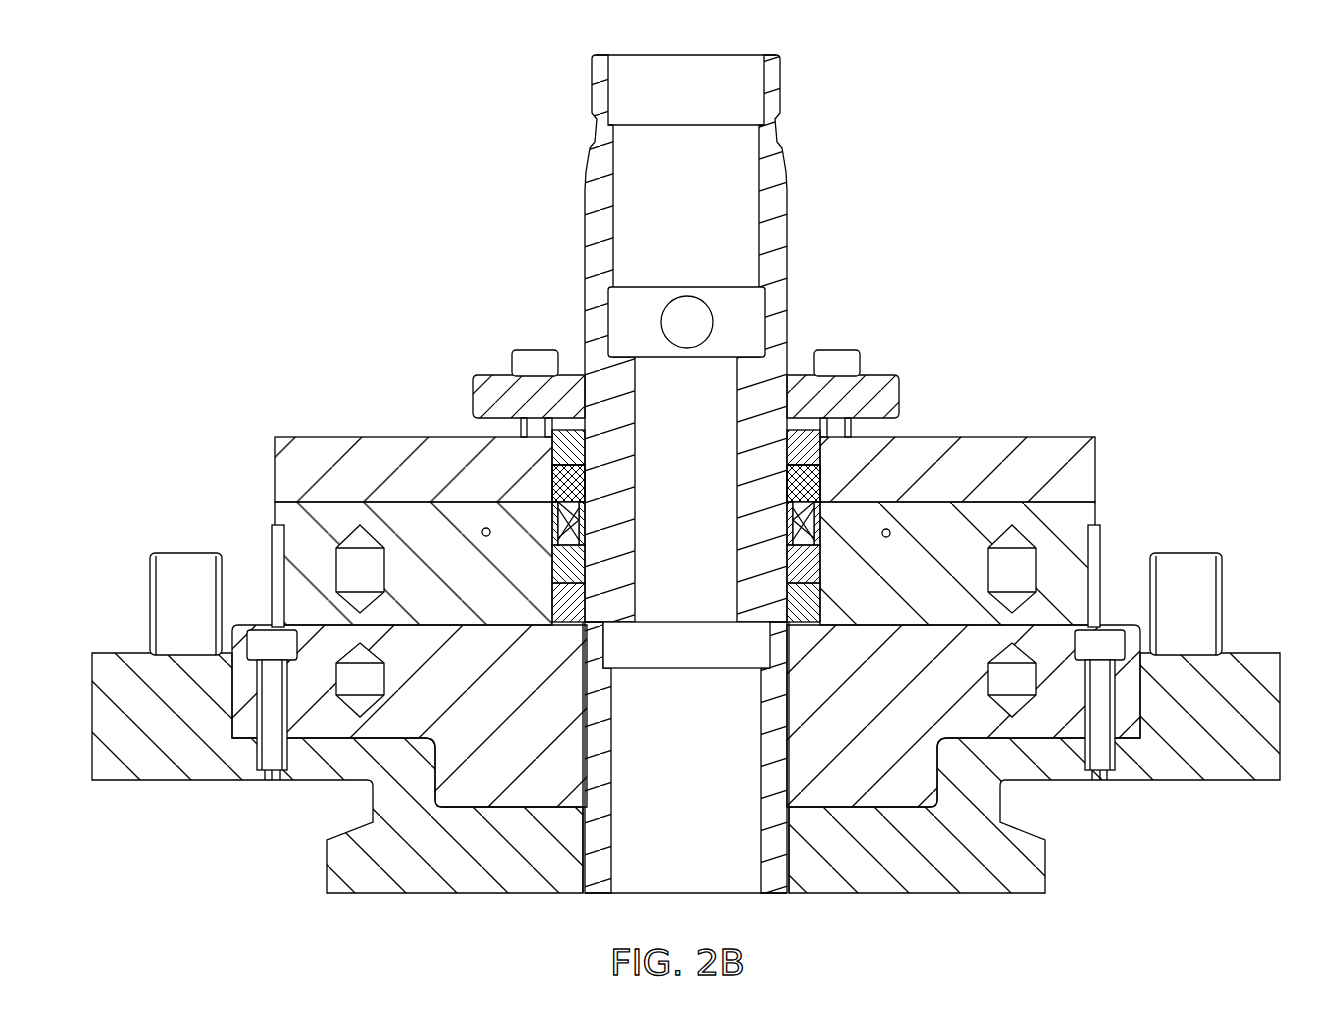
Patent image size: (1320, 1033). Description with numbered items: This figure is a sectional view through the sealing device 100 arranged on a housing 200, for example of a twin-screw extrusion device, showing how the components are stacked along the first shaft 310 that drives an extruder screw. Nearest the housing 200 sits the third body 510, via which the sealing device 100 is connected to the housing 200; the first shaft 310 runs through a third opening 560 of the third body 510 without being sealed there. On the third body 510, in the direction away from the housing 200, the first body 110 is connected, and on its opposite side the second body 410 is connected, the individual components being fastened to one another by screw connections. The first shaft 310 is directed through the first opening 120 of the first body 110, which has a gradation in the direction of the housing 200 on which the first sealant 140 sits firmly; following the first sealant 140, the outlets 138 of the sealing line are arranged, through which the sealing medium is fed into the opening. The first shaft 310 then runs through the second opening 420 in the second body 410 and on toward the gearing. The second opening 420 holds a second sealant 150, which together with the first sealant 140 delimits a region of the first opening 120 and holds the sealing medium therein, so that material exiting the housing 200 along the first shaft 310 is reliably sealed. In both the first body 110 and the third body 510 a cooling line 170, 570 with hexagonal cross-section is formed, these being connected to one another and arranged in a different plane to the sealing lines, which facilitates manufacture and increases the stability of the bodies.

The sealing device 100 is at (1135, 340).
The first body 110 is at (1097, 512).
The first opening 120 is at (606, 652).
The outlets 138 is at (793, 527).
The first sealant 140 is at (793, 600).
The second sealant 150 is at (570, 458).
The cooling line 170 is at (360, 573).
The housing 200 is at (165, 783).
The first shaft 310 is at (783, 237).
The second body 410 is at (1028, 437).
The second opening 420 is at (788, 430).
The third body 510 is at (1060, 742).
The third opening 560 is at (786, 688).
The cooling line 570 is at (1010, 680).